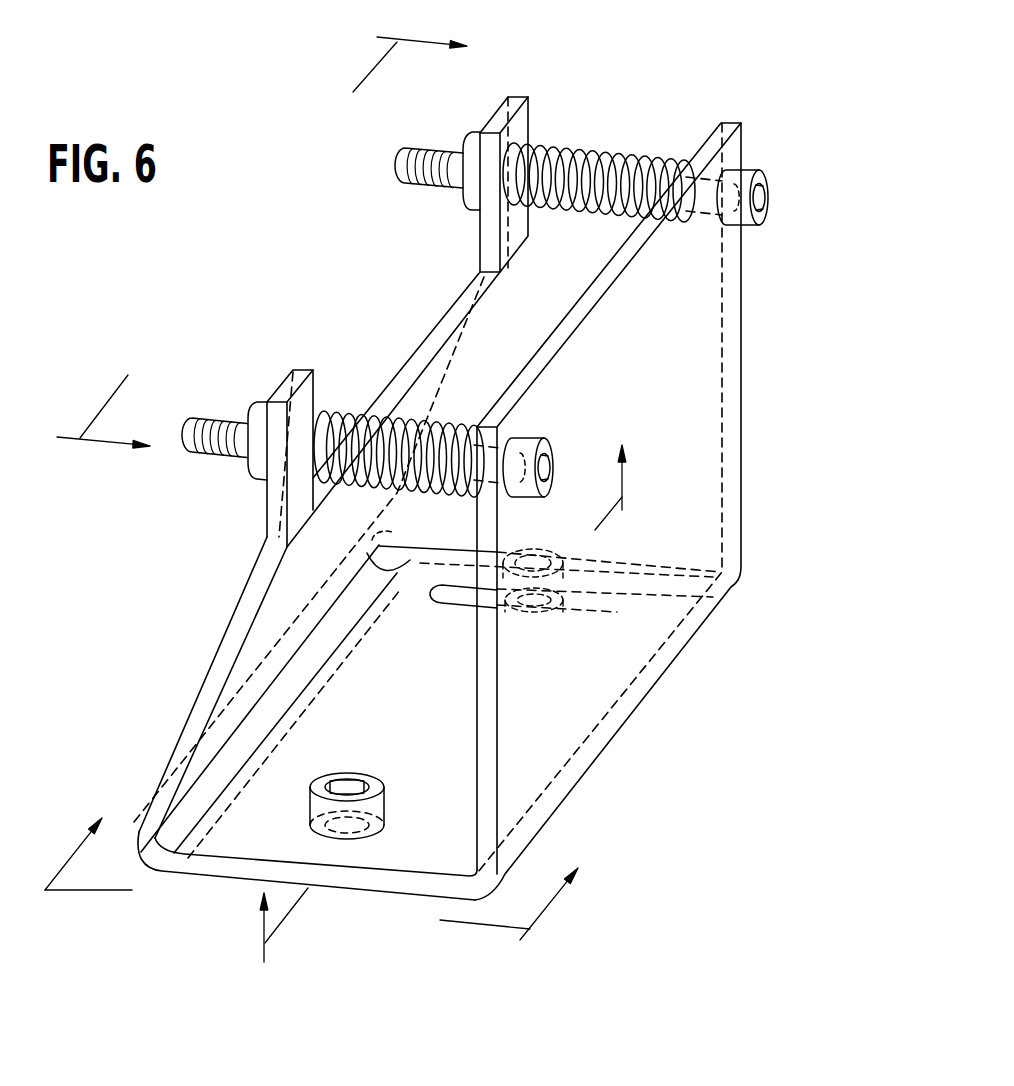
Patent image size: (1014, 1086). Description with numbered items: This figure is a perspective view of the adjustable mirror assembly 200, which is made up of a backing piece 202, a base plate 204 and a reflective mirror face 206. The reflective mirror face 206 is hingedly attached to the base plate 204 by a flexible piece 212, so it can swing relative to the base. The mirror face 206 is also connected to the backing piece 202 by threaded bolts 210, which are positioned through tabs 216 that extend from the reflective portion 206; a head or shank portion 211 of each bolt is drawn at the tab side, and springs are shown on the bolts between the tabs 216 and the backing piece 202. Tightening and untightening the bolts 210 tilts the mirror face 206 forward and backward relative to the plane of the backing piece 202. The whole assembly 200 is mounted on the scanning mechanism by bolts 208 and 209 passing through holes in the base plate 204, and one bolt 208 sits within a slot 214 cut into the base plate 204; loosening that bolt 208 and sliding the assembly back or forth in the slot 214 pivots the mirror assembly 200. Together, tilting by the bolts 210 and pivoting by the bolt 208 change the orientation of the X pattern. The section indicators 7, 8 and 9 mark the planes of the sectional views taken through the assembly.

The adjustable mirror assembly 200 is at (772, 306).
The backing piece 202 is at (741, 427).
The base plate 204 is at (353, 889).
The reflective mirror face 206 is at (156, 694).
The bolt 208 is at (565, 558).
The bolt 209 is at (360, 778).
The threaded bolt 210 is at (600, 160).
The bolt 211 is at (468, 199).
The flexible piece 212 is at (297, 678).
The slot 214 is at (617, 608).
The tab 216 is at (520, 98).
The section line 7 is at (321, 863).
The section line 8 is at (274, 245).
The section line 9 is at (434, 684).